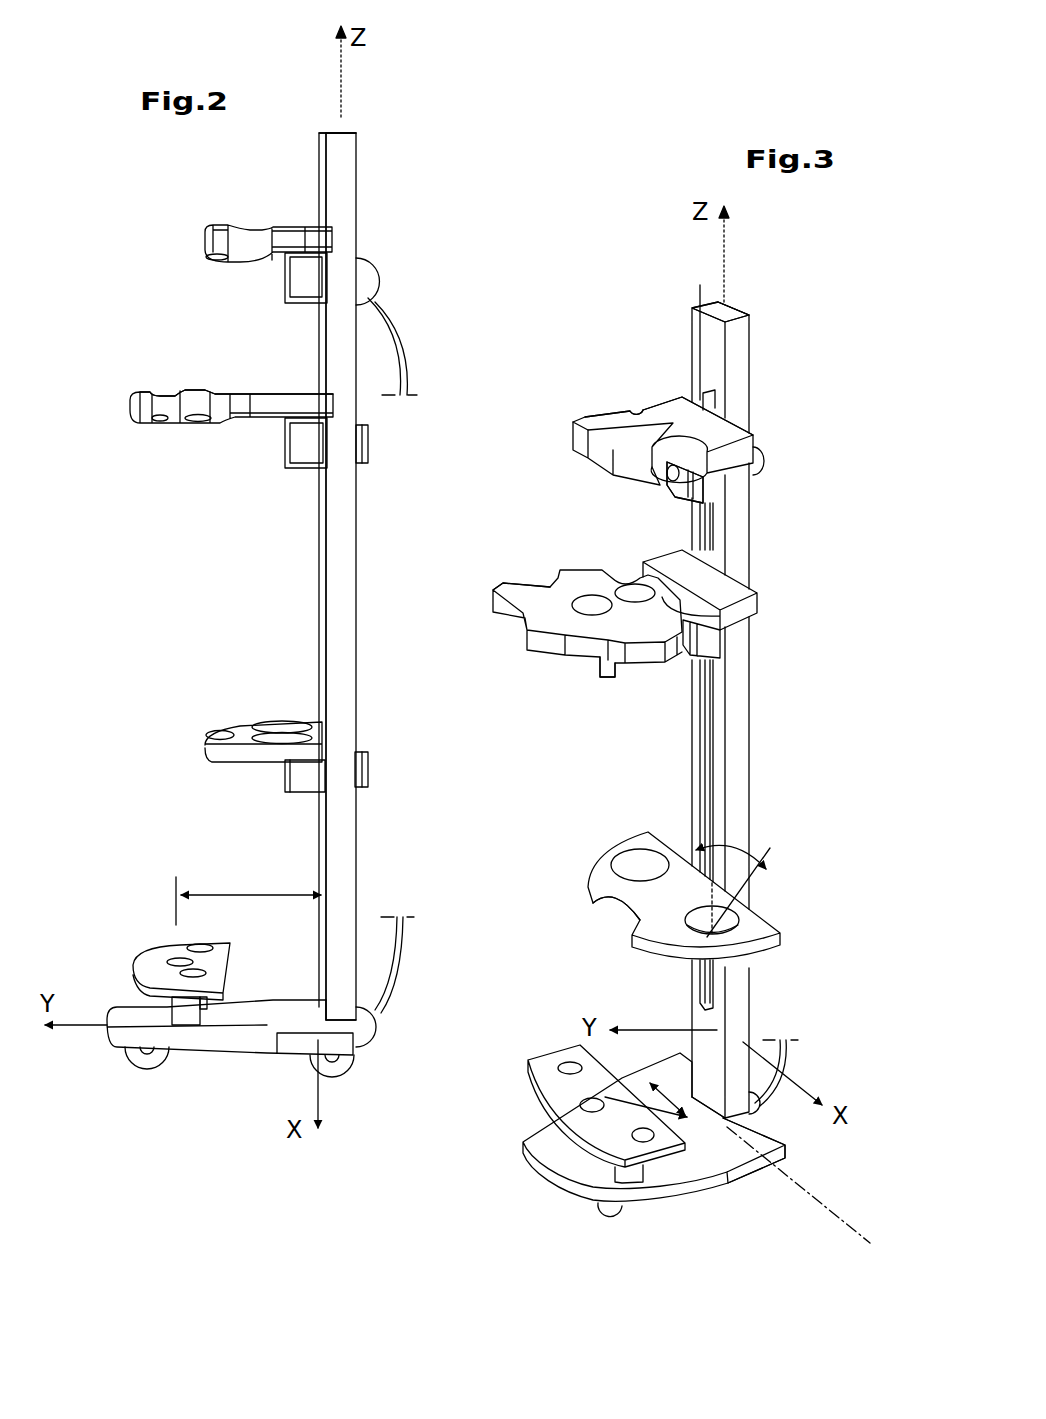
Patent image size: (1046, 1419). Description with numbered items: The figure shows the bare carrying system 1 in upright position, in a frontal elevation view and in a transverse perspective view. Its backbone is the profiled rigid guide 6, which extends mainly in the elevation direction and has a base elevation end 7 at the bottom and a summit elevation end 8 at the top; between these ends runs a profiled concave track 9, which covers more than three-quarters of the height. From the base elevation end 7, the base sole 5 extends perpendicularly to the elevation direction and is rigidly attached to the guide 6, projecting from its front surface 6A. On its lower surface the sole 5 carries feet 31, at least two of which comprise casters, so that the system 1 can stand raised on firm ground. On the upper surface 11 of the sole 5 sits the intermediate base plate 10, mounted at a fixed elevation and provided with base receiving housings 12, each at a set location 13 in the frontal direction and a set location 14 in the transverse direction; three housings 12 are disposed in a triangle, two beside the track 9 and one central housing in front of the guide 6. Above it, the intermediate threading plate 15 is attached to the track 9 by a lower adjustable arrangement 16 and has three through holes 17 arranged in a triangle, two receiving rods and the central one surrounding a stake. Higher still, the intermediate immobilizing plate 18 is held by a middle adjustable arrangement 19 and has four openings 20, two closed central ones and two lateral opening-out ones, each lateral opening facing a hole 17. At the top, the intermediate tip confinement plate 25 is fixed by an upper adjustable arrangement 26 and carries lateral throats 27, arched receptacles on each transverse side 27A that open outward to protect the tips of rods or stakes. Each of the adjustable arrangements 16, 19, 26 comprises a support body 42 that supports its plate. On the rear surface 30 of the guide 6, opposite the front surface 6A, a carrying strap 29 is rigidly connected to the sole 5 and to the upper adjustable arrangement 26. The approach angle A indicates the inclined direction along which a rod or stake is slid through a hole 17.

In FIG. 2, the carrying system 1 is at (438, 150).
In FIG. 3, the carrying system 1 is at (655, 320).
In FIG. 2, the base sole 5 is at (187, 1043).
In FIG. 3, the base sole 5 is at (558, 1198).
In FIG. 2, the profiled rigid guide 6 is at (361, 655).
In FIG. 3, the profiled rigid guide 6 is at (740, 752).
In FIG. 2, the front surface 6A is at (328, 162).
In FIG. 3, the front surface 6A is at (705, 722).
In FIG. 2, the base elevation end 7 is at (342, 1028).
In FIG. 2, the summit elevation end 8 is at (364, 133).
In FIG. 2, the profiled concave track 9 is at (318, 572).
In FIG. 3, the profiled concave track 9 is at (700, 753).
In FIG. 2, the intermediate base plate 10 is at (147, 960).
In FIG. 3, the intermediate base plate 10 is at (555, 1090).
In FIG. 3, the upper surface 11 is at (707, 1153).
In FIG. 2, the base receiving housings 12 is at (193, 973).
In FIG. 3, the base receiving housings 12 is at (570, 1072).
In FIG. 2, the set location in the frontal direction 13 is at (248, 894).
In FIG. 3, the set location in the transverse direction 14 is at (672, 1078).
In FIG. 2, the intermediate threading plate 15 is at (210, 748).
In FIG. 3, the intermediate threading plate 15 is at (620, 888).
In FIG. 2, the lower adjustable arrangement 16 is at (295, 777).
In FIG. 3, the lower adjustable arrangement 16 is at (748, 932).
In FIG. 2, the through holes 17 is at (218, 732).
In FIG. 3, the through holes 17 is at (625, 867).
In FIG. 2, the intermediate immobilizing plate 18 is at (128, 400).
In FIG. 3, the intermediate immobilizing plate 18 is at (548, 650).
In FIG. 2, the middle adjustable arrangement 19 is at (300, 283).
In FIG. 3, the middle adjustable arrangement 19 is at (747, 608).
In FIG. 2, the openings 20 is at (190, 384).
In FIG. 3, the openings 20 is at (620, 573).
In FIG. 2, the intermediate tip confinement plate 25 is at (205, 242).
In FIG. 3, the intermediate tip confinement plate 25 is at (673, 396).
In FIG. 3, the upper adjustable arrangement 26 is at (757, 422).
In FIG. 3, the lateral throats 27 is at (673, 488).
In FIG. 3, the transverse side 27A is at (615, 407).
In FIG. 2, the carrying strap 29 is at (406, 350).
In FIG. 3, the carrying strap 29 is at (783, 1067).
In FIG. 2, the rear surface 30 is at (358, 713).
In FIG. 3, the rear surface 30 is at (752, 368).
In FIG. 2, the feet 31 is at (143, 1063).
In FIG. 3, the feet 31 is at (612, 1212).
In FIG. 3, the support body 42 is at (713, 487).
In FIG. 3, the approach angle A is at (740, 847).